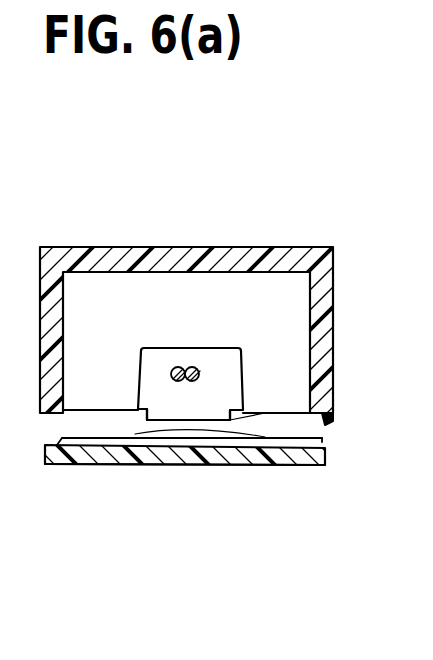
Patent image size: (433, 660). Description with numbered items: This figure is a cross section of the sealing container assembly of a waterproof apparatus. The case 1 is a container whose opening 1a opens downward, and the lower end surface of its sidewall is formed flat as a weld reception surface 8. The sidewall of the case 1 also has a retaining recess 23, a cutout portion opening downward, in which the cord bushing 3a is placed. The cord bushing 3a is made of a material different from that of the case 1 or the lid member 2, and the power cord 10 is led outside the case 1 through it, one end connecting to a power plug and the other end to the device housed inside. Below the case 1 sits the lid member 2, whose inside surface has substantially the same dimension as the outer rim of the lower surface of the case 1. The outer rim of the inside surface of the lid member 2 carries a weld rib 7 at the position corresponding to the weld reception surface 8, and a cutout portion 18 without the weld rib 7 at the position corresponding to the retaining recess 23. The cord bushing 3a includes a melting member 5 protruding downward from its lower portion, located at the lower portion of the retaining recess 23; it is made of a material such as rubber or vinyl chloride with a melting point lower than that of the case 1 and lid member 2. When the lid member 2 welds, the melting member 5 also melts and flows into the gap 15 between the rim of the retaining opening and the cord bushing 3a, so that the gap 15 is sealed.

The case 1 is at (104, 247).
The opening 1a is at (265, 414).
The lid member 2 is at (277, 465).
The cord bushing 3a is at (218, 357).
The melting member 5 is at (194, 414).
The weld rib 7 is at (76, 446).
The weld reception surface 8 is at (328, 422).
The power cord 10 is at (178, 367).
The gap 15 is at (134, 433).
The cutout portion 18 is at (170, 440).
The retaining recess 23 is at (243, 387).